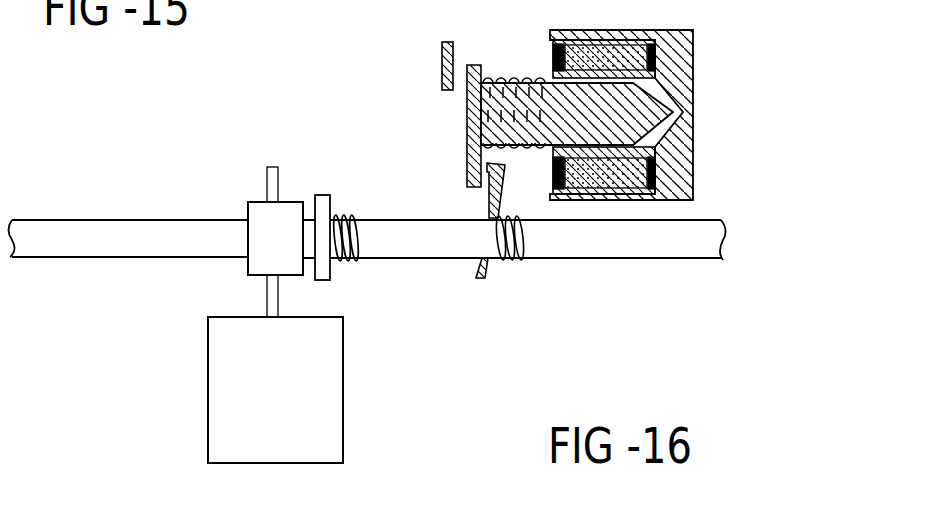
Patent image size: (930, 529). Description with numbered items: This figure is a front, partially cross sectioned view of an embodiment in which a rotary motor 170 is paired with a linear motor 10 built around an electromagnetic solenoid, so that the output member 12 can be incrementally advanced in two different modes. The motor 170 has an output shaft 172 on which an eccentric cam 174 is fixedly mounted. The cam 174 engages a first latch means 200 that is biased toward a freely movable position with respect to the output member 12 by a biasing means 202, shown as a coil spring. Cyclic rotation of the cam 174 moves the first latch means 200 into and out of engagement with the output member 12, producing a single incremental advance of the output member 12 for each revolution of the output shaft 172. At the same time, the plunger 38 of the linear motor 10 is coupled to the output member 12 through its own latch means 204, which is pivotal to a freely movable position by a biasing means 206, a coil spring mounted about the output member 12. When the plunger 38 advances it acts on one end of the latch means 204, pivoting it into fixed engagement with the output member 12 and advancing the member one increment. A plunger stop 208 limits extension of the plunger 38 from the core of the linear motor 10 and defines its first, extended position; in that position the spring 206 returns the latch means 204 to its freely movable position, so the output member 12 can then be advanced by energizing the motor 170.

The linear motor 10 is at (752, 52).
The output member 12 is at (756, 205).
The plunger 38 is at (612, 93).
The rotary motor 170 is at (326, 372).
The output shaft 172 is at (266, 178).
The eccentric cam 174 is at (248, 212).
The first latch means 200 is at (323, 196).
The biasing means 202 is at (356, 244).
The latch means 204 is at (508, 192).
The biasing means 206 is at (521, 243).
The plunger stop 208 is at (442, 59).